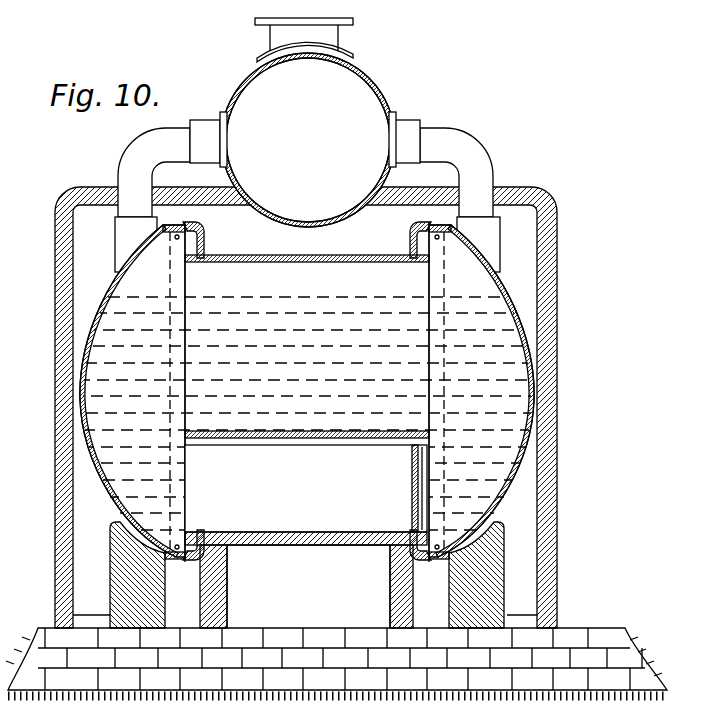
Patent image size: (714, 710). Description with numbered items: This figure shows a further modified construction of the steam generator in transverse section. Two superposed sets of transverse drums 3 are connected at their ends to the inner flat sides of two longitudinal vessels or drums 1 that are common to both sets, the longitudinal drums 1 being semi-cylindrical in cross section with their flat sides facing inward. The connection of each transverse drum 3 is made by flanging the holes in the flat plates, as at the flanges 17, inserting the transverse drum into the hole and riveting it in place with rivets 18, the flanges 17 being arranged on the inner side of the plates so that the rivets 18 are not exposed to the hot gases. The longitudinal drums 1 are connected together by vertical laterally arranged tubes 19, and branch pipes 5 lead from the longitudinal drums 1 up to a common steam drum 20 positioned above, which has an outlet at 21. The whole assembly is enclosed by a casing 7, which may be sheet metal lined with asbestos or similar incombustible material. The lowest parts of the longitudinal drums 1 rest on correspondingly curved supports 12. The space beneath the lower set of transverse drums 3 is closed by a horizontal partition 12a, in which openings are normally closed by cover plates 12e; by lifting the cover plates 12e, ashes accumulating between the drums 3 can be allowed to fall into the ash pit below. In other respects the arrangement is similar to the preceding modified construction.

The longitudinal drum 1 is at (307, 392).
The transverse drum 3 is at (307, 400).
The branch pipe 5 is at (307, 196).
The casing 7 is at (58, 298).
The curved support 12 is at (125, 583).
The horizontal partition 12a is at (242, 547).
The cover plate 12e is at (320, 586).
The flange 17 is at (183, 250).
The rivet 18 is at (182, 223).
The vertical tube 19 is at (307, 413).
The steam drum 20 is at (308, 134).
The outlet 21 is at (283, 33).